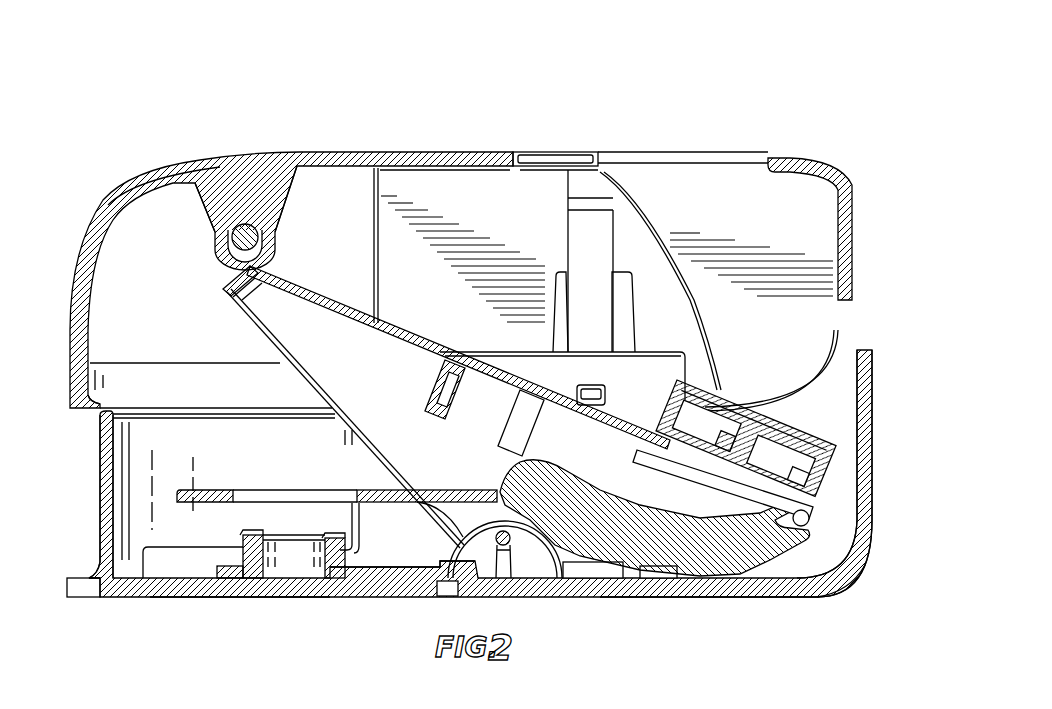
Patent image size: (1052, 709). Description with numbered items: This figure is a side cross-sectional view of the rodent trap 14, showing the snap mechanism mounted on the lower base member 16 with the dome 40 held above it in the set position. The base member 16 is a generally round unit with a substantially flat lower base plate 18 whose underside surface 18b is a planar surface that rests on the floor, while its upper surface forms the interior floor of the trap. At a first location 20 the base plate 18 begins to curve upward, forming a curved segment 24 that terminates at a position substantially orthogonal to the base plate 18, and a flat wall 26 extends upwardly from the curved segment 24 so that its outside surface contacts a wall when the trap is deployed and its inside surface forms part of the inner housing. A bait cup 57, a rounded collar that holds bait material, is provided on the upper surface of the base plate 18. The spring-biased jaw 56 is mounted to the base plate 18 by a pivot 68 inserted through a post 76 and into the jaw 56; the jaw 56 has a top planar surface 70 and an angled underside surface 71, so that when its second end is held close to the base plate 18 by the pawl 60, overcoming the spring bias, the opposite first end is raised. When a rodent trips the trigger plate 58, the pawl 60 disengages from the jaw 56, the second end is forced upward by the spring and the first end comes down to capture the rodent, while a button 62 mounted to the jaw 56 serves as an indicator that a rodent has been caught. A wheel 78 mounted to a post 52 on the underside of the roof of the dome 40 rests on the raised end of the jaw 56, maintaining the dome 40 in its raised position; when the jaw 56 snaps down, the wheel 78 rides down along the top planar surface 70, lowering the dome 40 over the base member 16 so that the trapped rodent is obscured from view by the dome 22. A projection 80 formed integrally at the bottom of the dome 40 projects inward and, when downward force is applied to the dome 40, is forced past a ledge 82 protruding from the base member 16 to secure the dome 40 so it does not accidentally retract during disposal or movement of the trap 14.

The rodent trap 14 is at (181, 92).
The lower base member 16 is at (88, 514).
The lower base plate 18 is at (138, 590).
The underside surface 18b is at (167, 597).
The first location 20 is at (783, 600).
The dome 22 is at (870, 540).
The curved segment 24 is at (840, 580).
The flat wall 26 is at (873, 457).
The dome 40 is at (856, 192).
The post 52 is at (222, 203).
The jaw 56 is at (300, 344).
The bait cup 57 is at (275, 568).
The trigger plate 58 is at (200, 503).
The pawl 60 is at (757, 573).
The button 62 is at (820, 490).
The pivot 68 is at (507, 541).
The top planar surface 70 is at (312, 292).
The angled underside surface 71 is at (427, 532).
The post 76 is at (565, 562).
The wheel 78 is at (237, 264).
The projection 80 is at (98, 408).
The ledge 82 is at (96, 569).